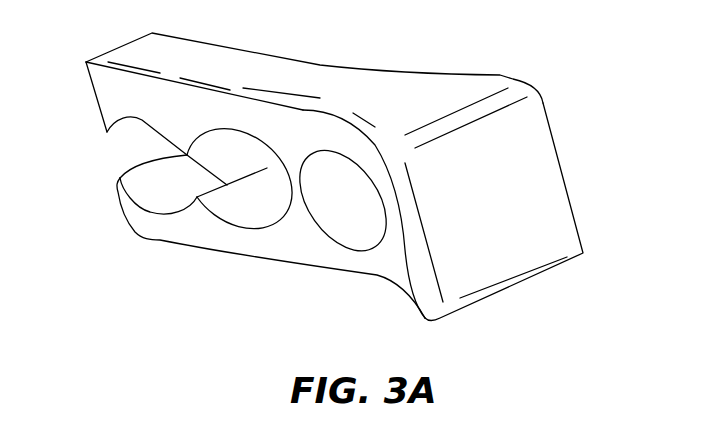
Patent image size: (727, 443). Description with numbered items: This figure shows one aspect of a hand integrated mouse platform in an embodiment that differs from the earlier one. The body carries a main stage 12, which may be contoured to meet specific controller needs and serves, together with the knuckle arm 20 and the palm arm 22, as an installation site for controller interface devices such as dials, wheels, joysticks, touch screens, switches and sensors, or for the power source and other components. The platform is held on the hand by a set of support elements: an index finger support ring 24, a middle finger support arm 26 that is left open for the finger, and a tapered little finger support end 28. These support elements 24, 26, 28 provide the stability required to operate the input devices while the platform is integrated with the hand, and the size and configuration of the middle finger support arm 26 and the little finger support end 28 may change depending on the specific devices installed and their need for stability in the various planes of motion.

The main stage 12 is at (507, 180).
The knuckle arm 20 is at (296, 138).
The palm arm 22 is at (295, 240).
The index finger support ring 24 is at (355, 217).
The middle finger support arm 26 is at (258, 183).
The little finger support end 28 is at (148, 173).